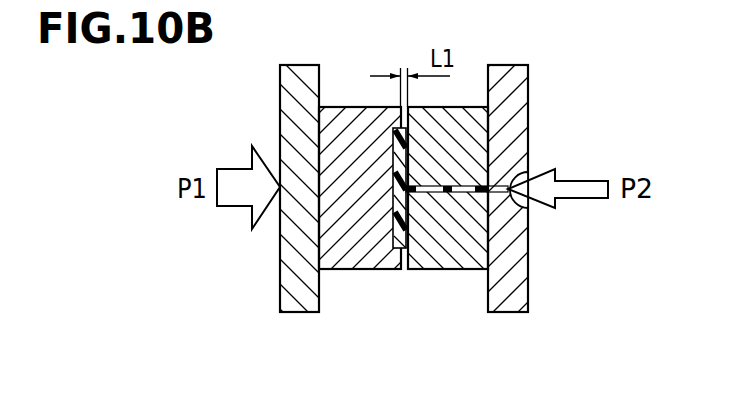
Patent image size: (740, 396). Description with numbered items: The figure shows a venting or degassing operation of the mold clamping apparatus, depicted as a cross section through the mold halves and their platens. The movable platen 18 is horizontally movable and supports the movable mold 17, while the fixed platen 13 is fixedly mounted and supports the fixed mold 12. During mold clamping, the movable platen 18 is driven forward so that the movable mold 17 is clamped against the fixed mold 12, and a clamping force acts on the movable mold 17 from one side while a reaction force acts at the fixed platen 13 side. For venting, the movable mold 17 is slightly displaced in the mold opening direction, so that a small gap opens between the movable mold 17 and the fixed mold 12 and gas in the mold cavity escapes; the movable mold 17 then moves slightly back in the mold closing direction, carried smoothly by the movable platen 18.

The movable platen 18 is at (295, 73).
The movable mold 17 is at (347, 107).
The fixed mold 12 is at (460, 107).
The fixed platen 13 is at (510, 72).